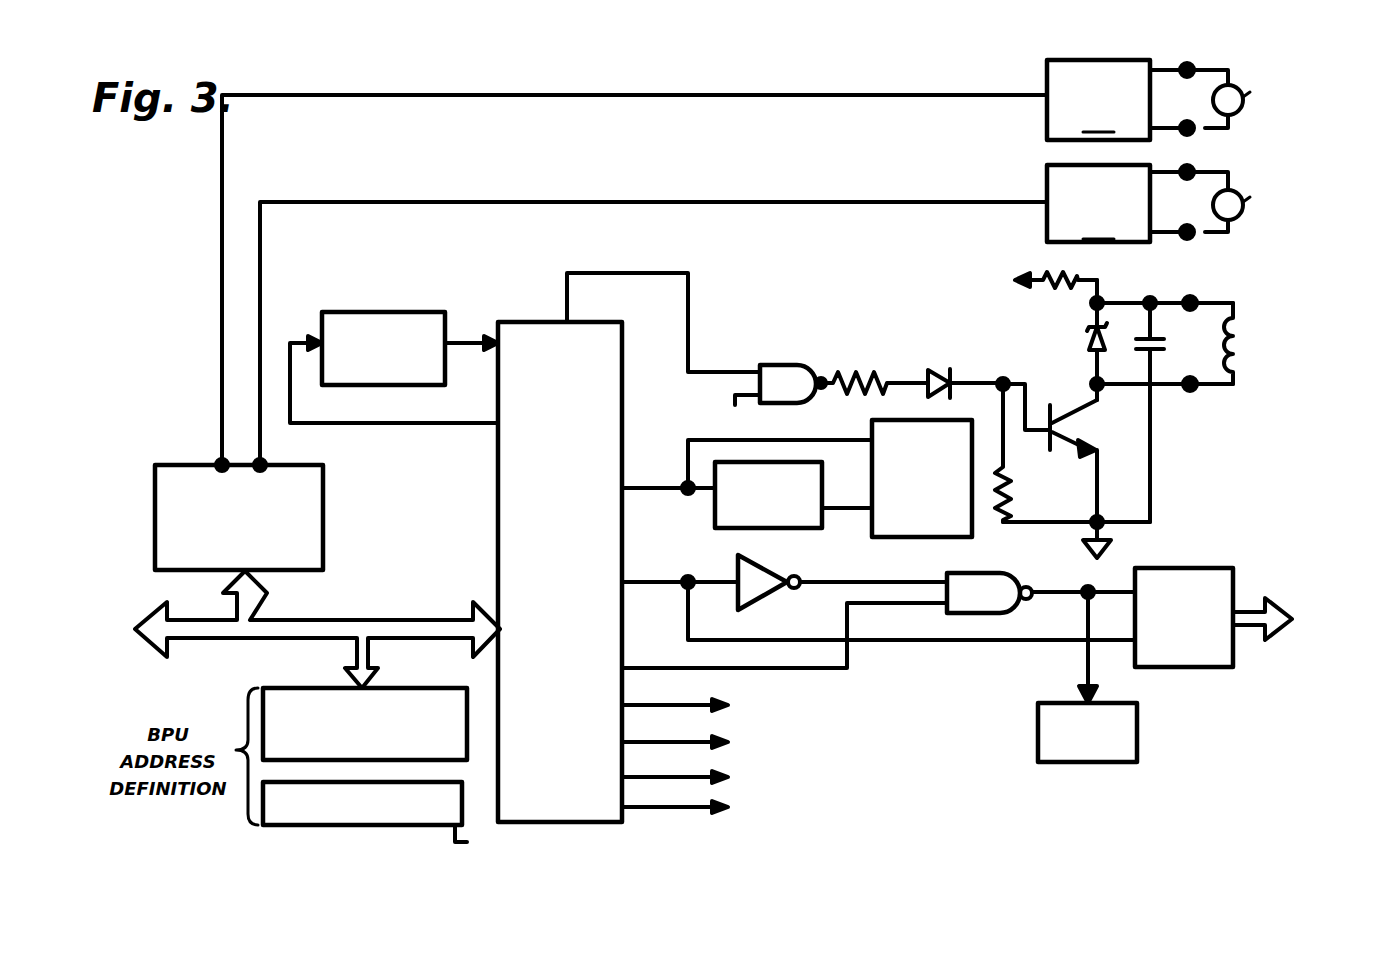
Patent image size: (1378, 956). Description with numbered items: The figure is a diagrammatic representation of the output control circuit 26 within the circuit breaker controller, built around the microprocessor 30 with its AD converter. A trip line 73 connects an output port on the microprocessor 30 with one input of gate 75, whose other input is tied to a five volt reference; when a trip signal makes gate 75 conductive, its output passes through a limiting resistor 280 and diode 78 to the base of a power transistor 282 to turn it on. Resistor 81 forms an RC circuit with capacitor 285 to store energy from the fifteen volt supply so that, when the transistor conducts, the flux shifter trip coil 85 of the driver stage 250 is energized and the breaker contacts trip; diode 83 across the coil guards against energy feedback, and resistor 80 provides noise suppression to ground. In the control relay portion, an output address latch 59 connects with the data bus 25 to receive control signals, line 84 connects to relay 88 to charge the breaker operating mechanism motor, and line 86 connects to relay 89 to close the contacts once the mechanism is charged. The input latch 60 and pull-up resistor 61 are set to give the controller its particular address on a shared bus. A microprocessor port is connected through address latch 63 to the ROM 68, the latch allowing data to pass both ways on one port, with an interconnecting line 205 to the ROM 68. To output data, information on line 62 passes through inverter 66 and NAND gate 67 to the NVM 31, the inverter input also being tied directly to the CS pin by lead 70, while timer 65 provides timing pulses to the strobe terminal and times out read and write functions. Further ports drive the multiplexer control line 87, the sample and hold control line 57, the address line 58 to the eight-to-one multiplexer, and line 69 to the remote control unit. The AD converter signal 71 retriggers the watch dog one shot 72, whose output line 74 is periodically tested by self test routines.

The line 84 is at (540, 97).
The line 86 is at (530, 202).
The relay 88 is at (1186, 100).
The relay 89 is at (1181, 203).
The output address latch 59 is at (224, 559).
The data bus 25 is at (325, 620).
The input latch 60 is at (440, 752).
The pull-up resistor 61 is at (263, 826).
The microprocessor 30 is at (529, 593).
The watch dog timer one shot 72 is at (348, 312).
The input line 74 is at (452, 342).
The AD converter signal 71 is at (482, 422).
The trip line 73 is at (567, 298).
The output control circuit 26 is at (778, 313).
The gate 75 is at (780, 366).
The resistor 280 is at (860, 378).
The diode 78 is at (948, 378).
The latch 63 is at (710, 505).
The address latch to ROM line 205 is at (833, 445).
The clock line 68 is at (905, 518).
The line 62 is at (643, 582).
The inverter 66 is at (766, 601).
The lead 70 is at (925, 645).
The NAND gate 67 is at (1000, 578).
The NVM 31 is at (1180, 638).
The timer 65 is at (1140, 757).
The multiplexer control line 87 is at (652, 705).
The sample and hold control line 57 is at (642, 742).
The address line 58 is at (645, 777).
The line 69 is at (645, 807).
The resistor 81 is at (1070, 278).
The flux shifter driver circuit 250 is at (1205, 433).
The diode 83 is at (1081, 336).
The transistor 282 is at (1068, 453).
The resistor 80 is at (1012, 486).
The capacitor 285 is at (1162, 345).
The trip coil 85 is at (1262, 302).